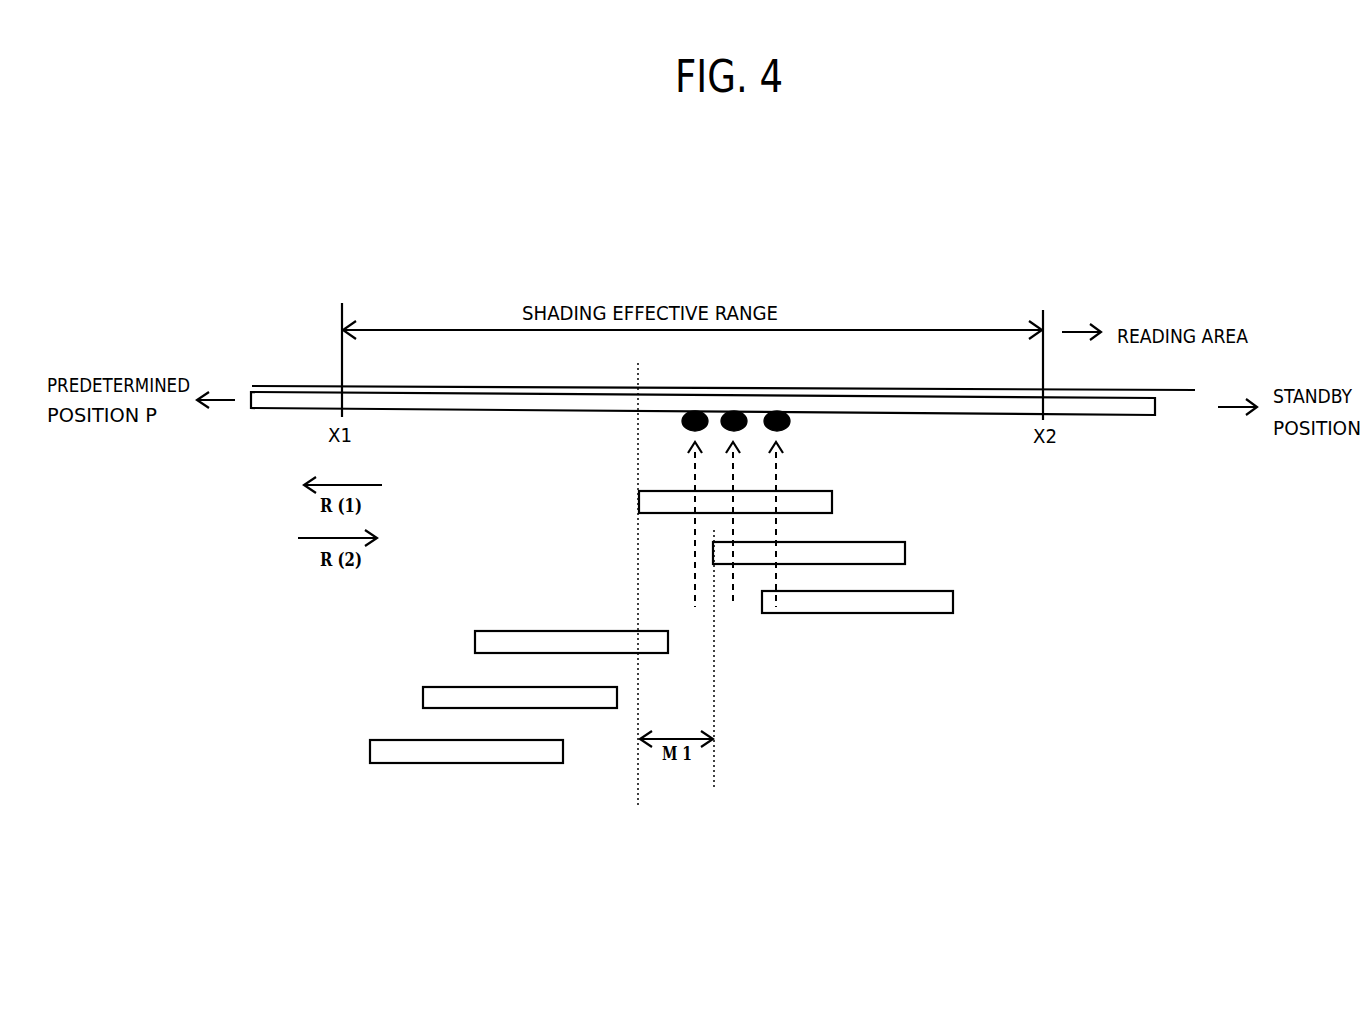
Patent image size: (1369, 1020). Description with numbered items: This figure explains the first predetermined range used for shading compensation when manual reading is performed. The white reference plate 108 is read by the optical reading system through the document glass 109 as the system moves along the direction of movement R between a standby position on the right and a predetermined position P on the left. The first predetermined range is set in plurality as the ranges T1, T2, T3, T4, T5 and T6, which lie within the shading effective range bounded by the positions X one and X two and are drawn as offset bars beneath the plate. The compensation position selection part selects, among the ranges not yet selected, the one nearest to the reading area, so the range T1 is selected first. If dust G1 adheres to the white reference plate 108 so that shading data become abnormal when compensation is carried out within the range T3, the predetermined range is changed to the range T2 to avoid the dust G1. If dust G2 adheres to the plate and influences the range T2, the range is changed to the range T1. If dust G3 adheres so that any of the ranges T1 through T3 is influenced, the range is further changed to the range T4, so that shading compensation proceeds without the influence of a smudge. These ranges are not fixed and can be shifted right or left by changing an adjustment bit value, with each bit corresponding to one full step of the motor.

The white reference plate 108 is at (1177, 391).
The document glass 109 is at (263, 408).
The dust G1 is at (695, 411).
The dust G2 is at (734, 411).
The dust G3 is at (777, 411).
The first predetermined range T1 is at (870, 599).
The first predetermined range T2 is at (822, 550).
The first predetermined range T3 is at (747, 499).
The first predetermined range T4 is at (584, 641).
The first predetermined range T5 is at (531, 696).
The first predetermined range T6 is at (479, 749).